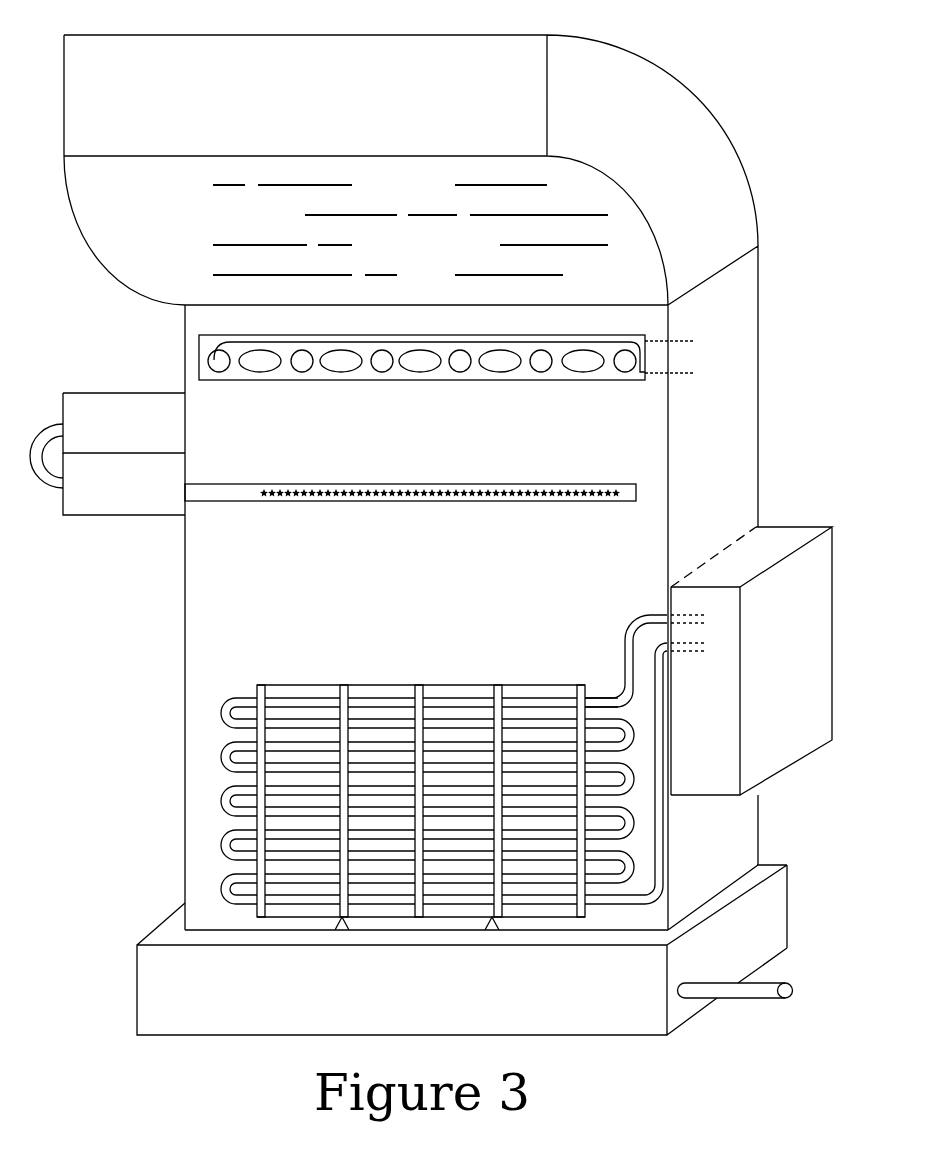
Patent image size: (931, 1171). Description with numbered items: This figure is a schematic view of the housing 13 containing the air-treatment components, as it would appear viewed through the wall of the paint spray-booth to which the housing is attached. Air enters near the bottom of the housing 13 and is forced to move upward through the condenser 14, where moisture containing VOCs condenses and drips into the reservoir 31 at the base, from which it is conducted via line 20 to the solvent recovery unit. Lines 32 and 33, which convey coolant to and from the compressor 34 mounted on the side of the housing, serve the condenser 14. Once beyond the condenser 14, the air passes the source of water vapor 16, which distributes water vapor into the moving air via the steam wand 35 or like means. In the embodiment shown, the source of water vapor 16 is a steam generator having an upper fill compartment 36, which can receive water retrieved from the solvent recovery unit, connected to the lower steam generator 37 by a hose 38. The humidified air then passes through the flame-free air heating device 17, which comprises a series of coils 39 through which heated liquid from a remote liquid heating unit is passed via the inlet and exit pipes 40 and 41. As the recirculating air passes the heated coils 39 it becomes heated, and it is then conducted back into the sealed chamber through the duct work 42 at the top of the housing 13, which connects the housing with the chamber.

The housing 13 is at (137, 770).
The condenser 14 is at (220, 812).
The source of water vapor 16 is at (103, 453).
The flame-free air heating device 17 is at (592, 378).
The line 20 is at (760, 983).
The reservoir 31 is at (137, 962).
The line 32 is at (657, 700).
The line 33 is at (633, 627).
The compressor 34 is at (833, 558).
The steam wand 35 is at (460, 503).
The upper fill compartment 36 is at (123, 393).
The steam generator 37 is at (140, 487).
The hose 38 is at (48, 422).
The coils 39 is at (342, 360).
The inlet pipe 40 is at (692, 373).
The exit pipe 41 is at (695, 342).
The duct work 42 is at (752, 155).